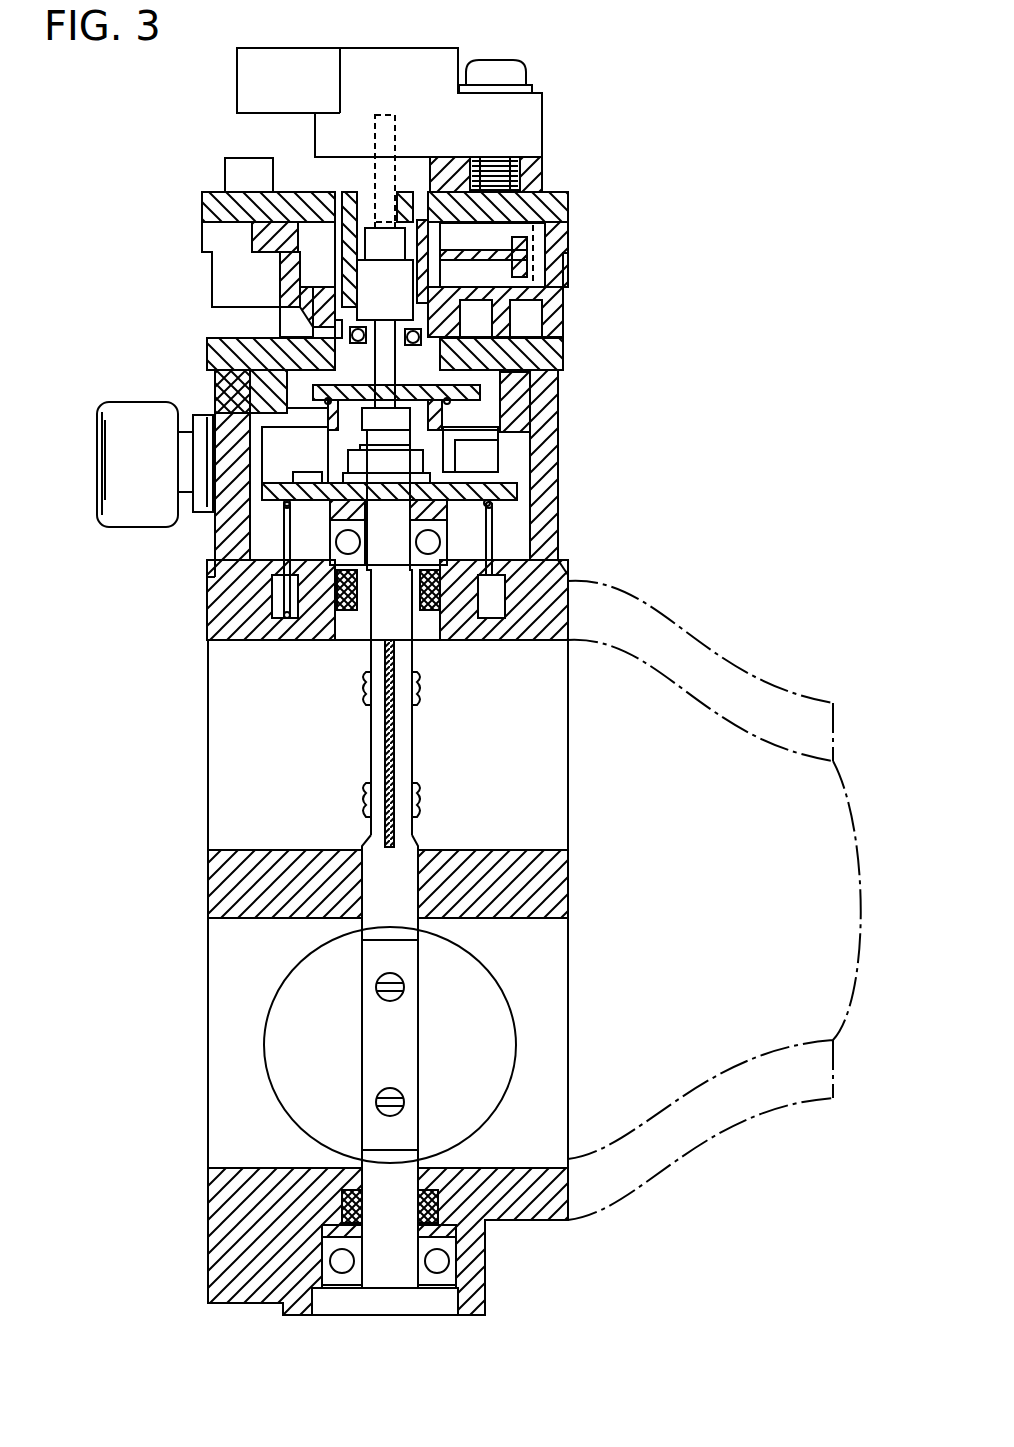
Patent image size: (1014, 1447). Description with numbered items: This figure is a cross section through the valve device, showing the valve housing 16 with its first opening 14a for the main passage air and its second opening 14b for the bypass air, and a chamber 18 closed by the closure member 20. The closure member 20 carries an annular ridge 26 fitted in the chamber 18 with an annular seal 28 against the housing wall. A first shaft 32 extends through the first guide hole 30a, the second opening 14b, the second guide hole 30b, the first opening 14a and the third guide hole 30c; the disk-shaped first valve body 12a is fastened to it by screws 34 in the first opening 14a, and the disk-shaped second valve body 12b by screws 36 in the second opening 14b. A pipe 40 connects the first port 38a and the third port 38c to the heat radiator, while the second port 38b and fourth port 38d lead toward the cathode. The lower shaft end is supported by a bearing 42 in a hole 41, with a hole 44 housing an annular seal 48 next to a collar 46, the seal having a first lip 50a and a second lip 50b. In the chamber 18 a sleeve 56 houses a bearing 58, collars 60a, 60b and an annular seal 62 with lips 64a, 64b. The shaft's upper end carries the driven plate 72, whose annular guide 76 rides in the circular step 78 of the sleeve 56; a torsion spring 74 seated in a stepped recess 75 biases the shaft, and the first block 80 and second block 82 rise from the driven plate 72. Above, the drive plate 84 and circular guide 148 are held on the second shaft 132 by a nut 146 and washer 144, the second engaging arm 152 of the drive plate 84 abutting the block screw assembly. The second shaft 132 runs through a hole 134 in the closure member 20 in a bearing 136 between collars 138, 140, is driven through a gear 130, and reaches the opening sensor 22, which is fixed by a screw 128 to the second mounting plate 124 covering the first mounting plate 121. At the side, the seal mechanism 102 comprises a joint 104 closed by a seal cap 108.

The opening sensor 22 is at (361, 64).
The screw 128 is at (515, 65).
The second shaft 132 is at (395, 182).
The second mounting plate 124 is at (205, 206).
The gear 130 is at (535, 225).
The first mounting plate 121 is at (532, 256).
The drive plate 84 is at (290, 332).
The hole 134 is at (377, 256).
The circular guide 148 is at (300, 336).
The washer 144 is at (232, 362).
The nut 146 is at (250, 402).
The bearing 136 is at (555, 301).
The collar 138 is at (553, 323).
The collar 140 is at (553, 345).
The closure member 20 is at (560, 361).
The annular seal 28 is at (482, 389).
The annular ridge 26 is at (482, 399).
The second engaging arm 152 is at (500, 441).
The first block 80 is at (500, 461).
The driven plate 72 is at (519, 491).
The annular guide 76 is at (450, 506).
The circular step 78 is at (450, 522).
The valve housing 16 is at (560, 572).
The chamber 18 is at (512, 577).
The seal cap 108 is at (135, 436).
The joint 104 is at (190, 466).
The seal mechanism 102 is at (90, 508).
The second block 82 is at (214, 522).
The annular collar 60a is at (336, 540).
The bearing 58 is at (300, 590).
The annular collar 60b is at (340, 600).
The second opening 14b is at (210, 650).
The sleeve 56 is at (287, 622).
The annular seal 62 is at (345, 612).
The first guide hole 30a is at (371, 662).
The first lip 64a is at (440, 612).
The second lip 64b is at (422, 675).
The stepped recess 75 is at (492, 622).
The torsion spring 74 is at (492, 652).
The second valve body 12b is at (385, 762).
The screws 36 is at (420, 710).
The fourth port 38d is at (212, 852).
The second guide hole 30b is at (362, 848).
The third port 38c is at (565, 852).
The first opening 14a is at (210, 928).
The first valve body 12a is at (300, 1002).
The first shaft 32 is at (370, 932).
The screws 34 is at (404, 1097).
The first lip 50a is at (422, 1200).
The second port 38b is at (212, 1168).
The first port 38a is at (565, 1168).
The third guide hole 30c is at (360, 1178).
The annular seal 48 is at (500, 1216).
The hole 44 is at (340, 1212).
The hole 41 is at (330, 1262).
The collar 46 is at (442, 1212).
The bearing 42 is at (449, 1262).
The second lip 50b is at (412, 1220).
The pipe 40 is at (712, 652).